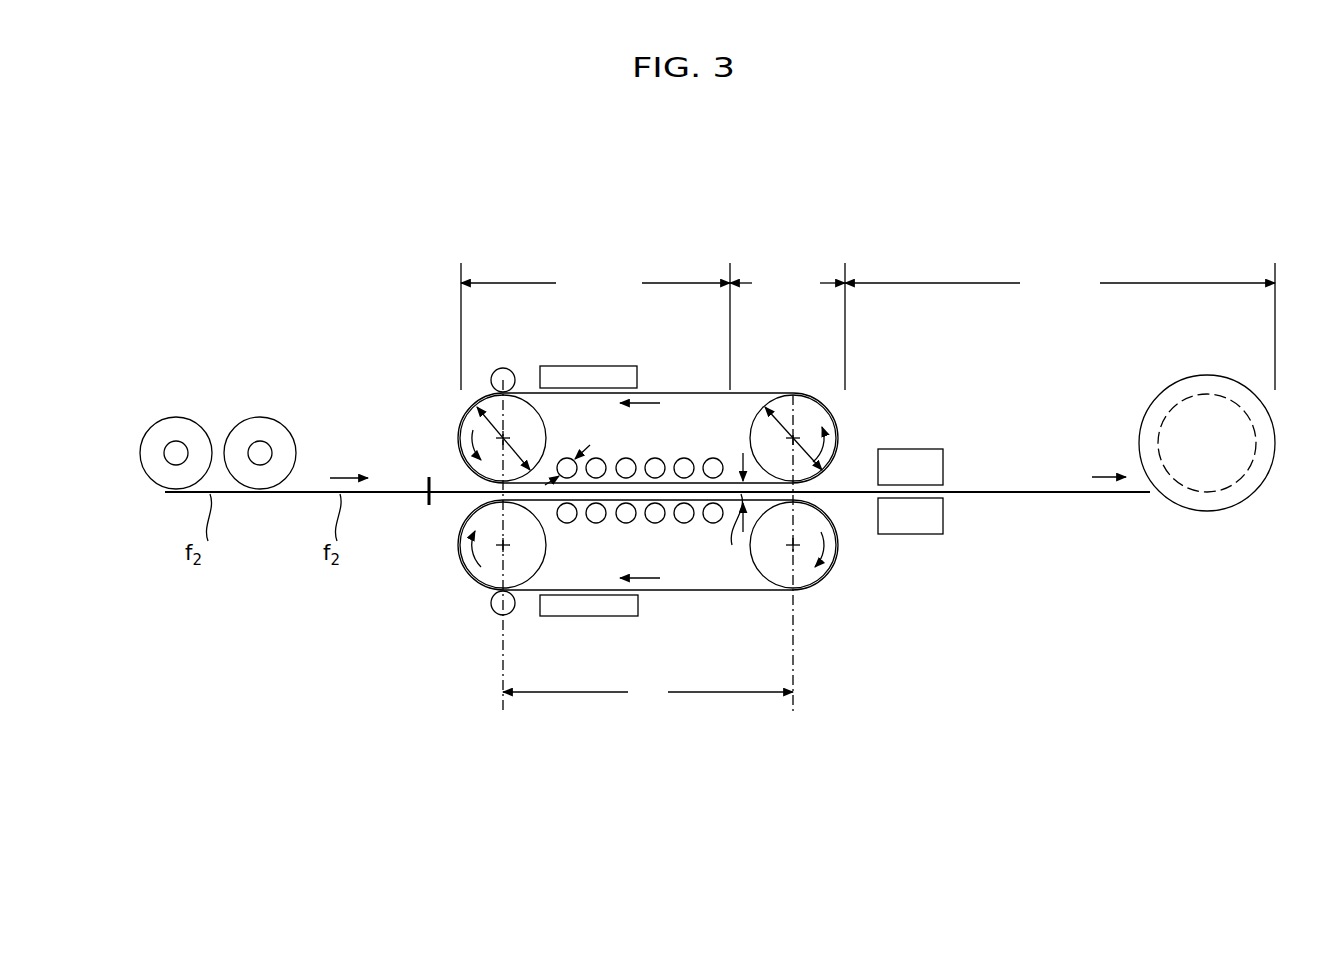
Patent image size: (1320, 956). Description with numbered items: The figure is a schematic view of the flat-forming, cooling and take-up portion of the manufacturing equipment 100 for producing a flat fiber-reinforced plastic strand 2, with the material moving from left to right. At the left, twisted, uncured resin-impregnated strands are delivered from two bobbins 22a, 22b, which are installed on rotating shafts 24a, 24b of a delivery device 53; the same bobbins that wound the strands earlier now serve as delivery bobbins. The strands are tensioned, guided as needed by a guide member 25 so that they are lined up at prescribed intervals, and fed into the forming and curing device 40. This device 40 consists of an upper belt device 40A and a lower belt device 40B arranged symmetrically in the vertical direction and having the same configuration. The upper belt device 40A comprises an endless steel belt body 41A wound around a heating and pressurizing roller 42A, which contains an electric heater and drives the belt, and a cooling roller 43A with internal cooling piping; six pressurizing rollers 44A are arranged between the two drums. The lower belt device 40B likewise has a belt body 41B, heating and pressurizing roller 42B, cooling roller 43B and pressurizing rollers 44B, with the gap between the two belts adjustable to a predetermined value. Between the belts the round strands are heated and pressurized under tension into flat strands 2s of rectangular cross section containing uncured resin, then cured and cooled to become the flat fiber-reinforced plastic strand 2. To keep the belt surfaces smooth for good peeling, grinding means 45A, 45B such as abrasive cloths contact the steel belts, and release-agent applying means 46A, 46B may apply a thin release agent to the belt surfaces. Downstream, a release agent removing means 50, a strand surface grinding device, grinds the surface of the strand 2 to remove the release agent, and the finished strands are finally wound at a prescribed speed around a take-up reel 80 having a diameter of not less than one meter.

The flat fiber-reinforced plastic strand 2 is at (862, 494).
The flat strand 2s is at (577, 494).
The bobbin 22a is at (270, 418).
The bobbin 22b is at (172, 418).
The rotating shaft 24a is at (258, 465).
The rotating shaft 24b is at (175, 465).
The guide member 25 is at (427, 485).
The forming and curing device 40 is at (475, 655).
The upper belt device 40A is at (462, 470).
The lower belt device 40B is at (464, 582).
The belt body 41A is at (655, 392).
The belt body 41B is at (687, 592).
The heating and pressurizing roller 42A is at (522, 396).
The heating and pressurizing roller 42B is at (540, 556).
The cooling roller 43A is at (751, 422).
The cooling roller 43B is at (762, 562).
The pressurizing roller 44A is at (725, 457).
The pressurizing roller 44B is at (725, 528).
The grinding means 45A is at (580, 378).
The grinding means 45B is at (597, 606).
The release-agent applying means 46A is at (503, 368).
The release-agent applying means 46B is at (507, 612).
The release agent removing means 50 is at (919, 433).
The delivery device 53 is at (233, 383).
The take-up reel 80 is at (1214, 364).
The manufacturing equipment 100 is at (868, 233).